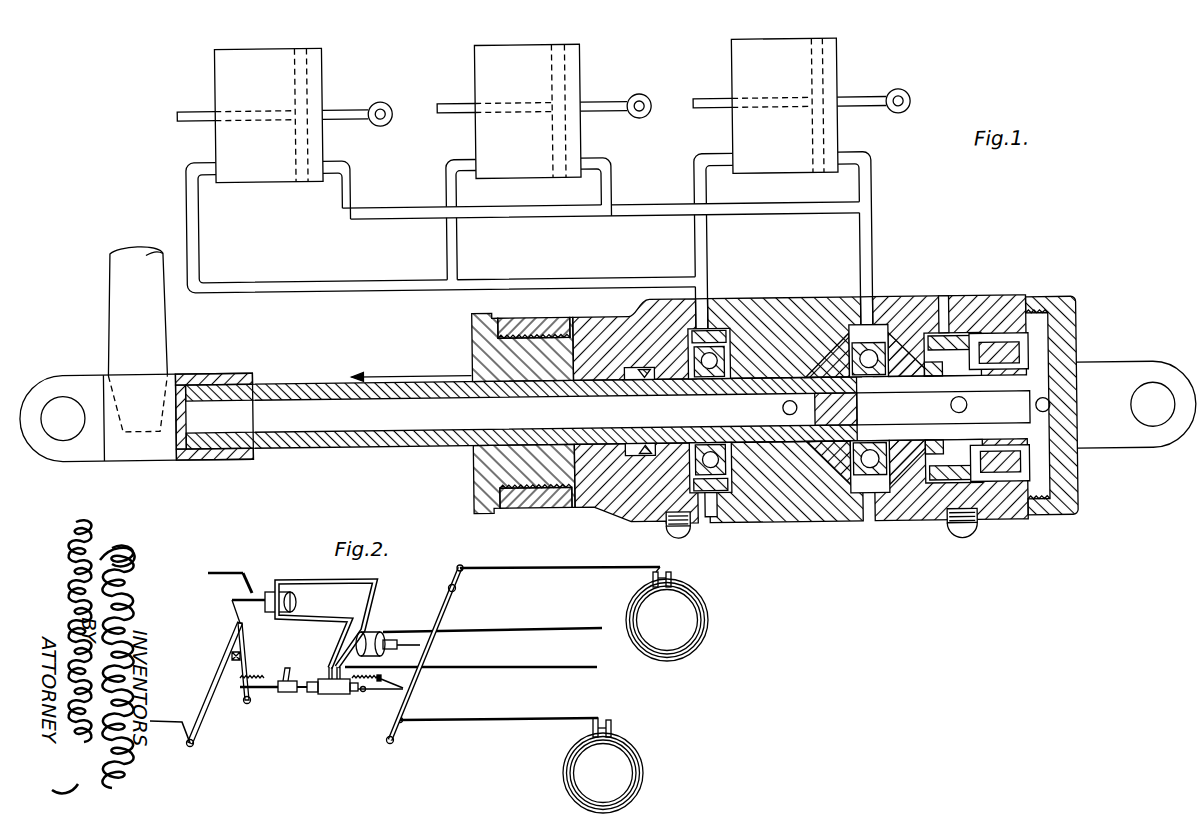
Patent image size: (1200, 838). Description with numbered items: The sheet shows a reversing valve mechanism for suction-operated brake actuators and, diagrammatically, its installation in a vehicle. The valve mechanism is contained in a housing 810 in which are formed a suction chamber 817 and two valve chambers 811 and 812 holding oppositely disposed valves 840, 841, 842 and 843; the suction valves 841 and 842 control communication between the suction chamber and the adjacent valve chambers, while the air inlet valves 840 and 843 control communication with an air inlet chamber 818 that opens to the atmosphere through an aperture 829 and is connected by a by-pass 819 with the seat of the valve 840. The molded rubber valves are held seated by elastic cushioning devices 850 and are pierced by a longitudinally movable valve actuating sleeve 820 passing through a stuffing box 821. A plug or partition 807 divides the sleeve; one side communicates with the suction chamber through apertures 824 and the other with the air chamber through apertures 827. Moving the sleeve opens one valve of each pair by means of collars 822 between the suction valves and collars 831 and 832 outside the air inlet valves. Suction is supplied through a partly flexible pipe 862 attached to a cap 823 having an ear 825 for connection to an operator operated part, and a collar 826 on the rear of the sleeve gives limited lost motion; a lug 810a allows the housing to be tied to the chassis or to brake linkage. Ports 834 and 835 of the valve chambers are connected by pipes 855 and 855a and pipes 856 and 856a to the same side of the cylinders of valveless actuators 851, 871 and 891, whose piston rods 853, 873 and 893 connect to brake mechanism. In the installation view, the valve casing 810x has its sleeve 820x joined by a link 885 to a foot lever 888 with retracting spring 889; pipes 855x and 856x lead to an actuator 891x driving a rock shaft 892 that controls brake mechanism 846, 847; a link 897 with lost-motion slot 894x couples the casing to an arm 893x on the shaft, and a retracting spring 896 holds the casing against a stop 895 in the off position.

In FIG. 1, the valveless actuator 851 is at (266, 60).
In FIG. 1, the valveless actuator 871 is at (519, 60).
In FIG. 1, the valveless actuator 891 is at (781, 56).
In FIG. 1, the piston rod 853 is at (349, 107).
In FIG. 1, the piston rod 873 is at (607, 102).
In FIG. 1, the piston rod 893 is at (859, 100).
In FIG. 1, the pipe 855a is at (201, 243).
In FIG. 1, the pipe 856a is at (356, 206).
In FIG. 1, the pipe 856 is at (809, 216).
In FIG. 1, the pipe 855 is at (591, 282).
In FIG. 1, the elastic cushioning device 850 is at (699, 298).
In FIG. 1, the port 834 is at (709, 289).
In FIG. 1, the collars 822 is at (799, 298).
In FIG. 1, the housing 810 is at (818, 302).
In FIG. 1, the port 835 is at (872, 299).
In FIG. 1, the air inlet chamber 818 is at (956, 299).
In FIG. 1, the collar 832 is at (947, 298).
In FIG. 1, the collar 831 is at (628, 366).
In FIG. 1, the apertures 827 is at (966, 404).
In FIG. 1, the aperture 829 is at (1049, 404).
In FIG. 1, the apertures 824 is at (783, 411).
In FIG. 1, the plug or partition 807 is at (862, 412).
In FIG. 1, the suction pipe 862 is at (110, 323).
In FIG. 2, the suction pipe 862 is at (289, 668).
In FIG. 1, the ear 825 is at (65, 456).
In FIG. 1, the cap 823 is at (180, 457).
In FIG. 1, the valve actuating sleeve 820 is at (380, 445).
In FIG. 1, the stuffing box 821 is at (546, 452).
In FIG. 1, the air inlet valve 840 is at (653, 464).
In FIG. 1, the valve chamber 811 is at (707, 496).
In FIG. 1, the suction valve 841 is at (717, 502).
In FIG. 1, the suction chamber 817 is at (800, 492).
In FIG. 1, the by-pass 819 is at (815, 512).
In FIG. 1, the suction valve 842 is at (847, 498).
In FIG. 1, the valve chamber 812 is at (874, 490).
In FIG. 1, the air inlet valve 843 is at (908, 472).
In FIG. 1, the collar 826 is at (1008, 521).
In FIG. 1, the lug 810a is at (1142, 455).
In FIG. 2, the valveless actuator 891x is at (368, 632).
In FIG. 2, the rock shaft 892 is at (450, 614).
In FIG. 2, the pipe 856x is at (555, 629).
In FIG. 2, the brake mechanism 847 is at (708, 620).
In FIG. 2, the retracting spring 889 is at (259, 677).
In FIG. 2, the retracting spring 896 is at (331, 668).
In FIG. 2, the slot 894x is at (420, 681).
In FIG. 2, the pipe 855x is at (549, 669).
In FIG. 2, the foot lever 888 is at (236, 698).
In FIG. 2, the link 885 is at (262, 691).
In FIG. 2, the valve actuating sleeve 820x is at (304, 690).
In FIG. 2, the valve casing 810x is at (338, 695).
In FIG. 2, the link 897 is at (374, 694).
In FIG. 2, the arm 893x is at (407, 694).
In FIG. 2, the stop 895 is at (353, 696).
In FIG. 2, the brake mechanism 846 is at (643, 773).